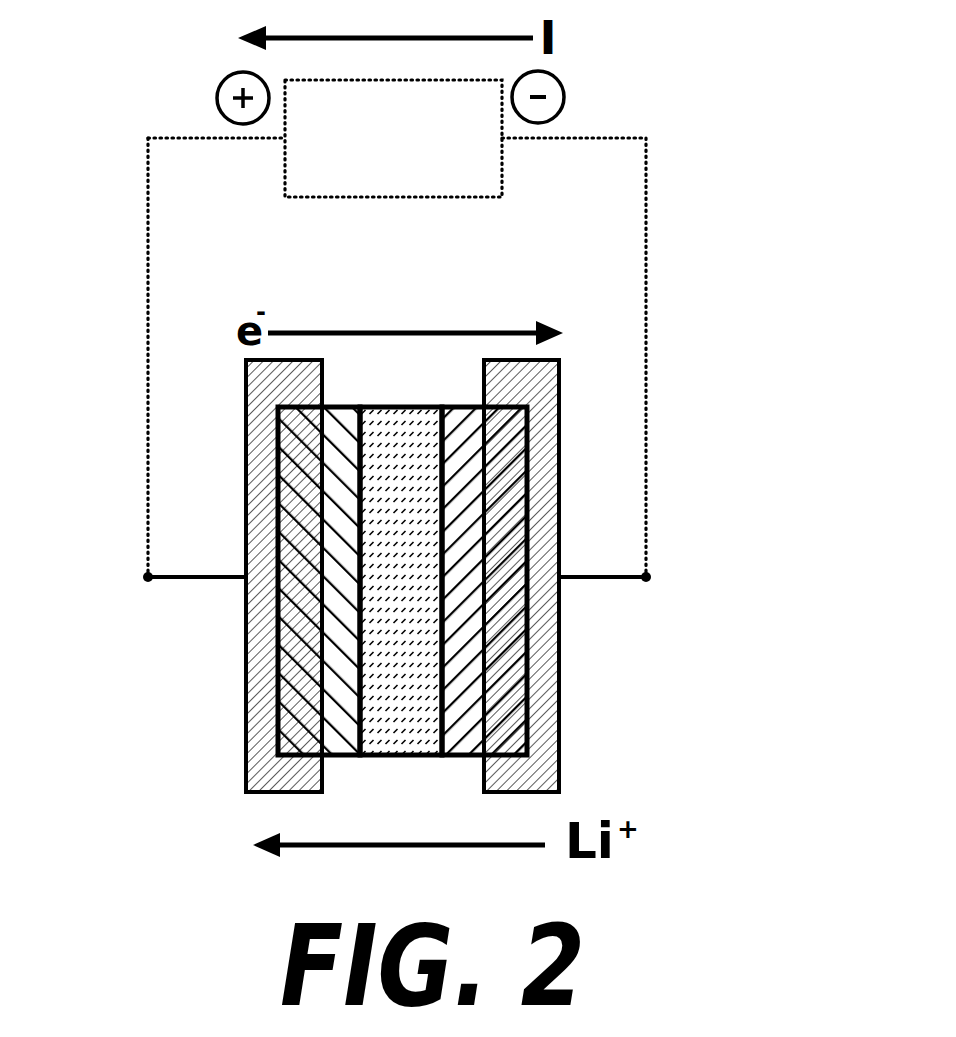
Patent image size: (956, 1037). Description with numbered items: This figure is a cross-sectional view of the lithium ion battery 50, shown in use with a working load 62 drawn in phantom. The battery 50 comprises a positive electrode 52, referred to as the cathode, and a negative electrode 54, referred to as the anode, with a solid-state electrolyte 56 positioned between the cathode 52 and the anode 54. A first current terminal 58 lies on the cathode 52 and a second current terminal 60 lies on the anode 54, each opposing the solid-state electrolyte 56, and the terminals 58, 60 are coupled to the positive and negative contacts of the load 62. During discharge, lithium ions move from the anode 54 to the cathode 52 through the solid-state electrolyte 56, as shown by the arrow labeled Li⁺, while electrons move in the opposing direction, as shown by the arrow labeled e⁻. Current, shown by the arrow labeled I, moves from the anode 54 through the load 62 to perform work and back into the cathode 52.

The lithium ion battery 50 is at (435, 599).
The positive electrode 52 is at (300, 612).
The negative electrode 54 is at (530, 660).
The solid-state electrolyte 56 is at (413, 742).
The first current terminal 58 is at (245, 733).
The second current terminal 60 is at (559, 768).
The load 62 is at (466, 199).